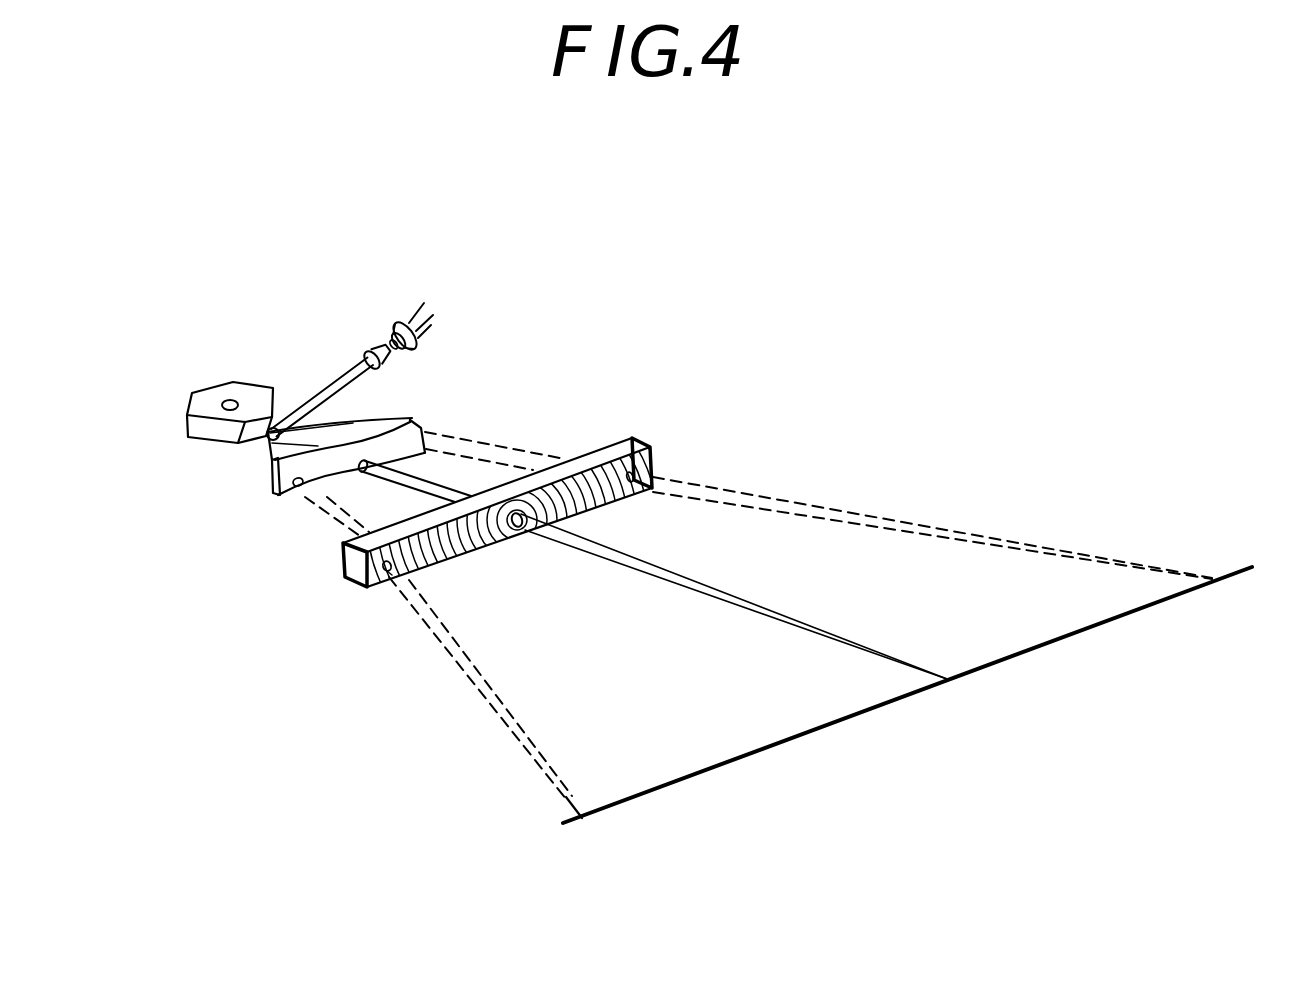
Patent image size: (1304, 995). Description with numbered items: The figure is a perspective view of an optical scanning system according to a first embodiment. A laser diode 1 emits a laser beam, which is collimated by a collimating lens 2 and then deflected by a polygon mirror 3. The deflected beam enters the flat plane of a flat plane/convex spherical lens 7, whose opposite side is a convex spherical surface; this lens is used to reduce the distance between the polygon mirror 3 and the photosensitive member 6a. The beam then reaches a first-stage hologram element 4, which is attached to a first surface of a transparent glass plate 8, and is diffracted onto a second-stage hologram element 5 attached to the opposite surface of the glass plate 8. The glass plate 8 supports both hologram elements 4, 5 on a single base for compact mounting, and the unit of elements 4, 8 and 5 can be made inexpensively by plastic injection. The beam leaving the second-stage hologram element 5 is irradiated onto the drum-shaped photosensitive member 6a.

The laser diode 1 is at (392, 318).
The collimating lens 2 is at (375, 345).
The polygon mirror 3 is at (276, 424).
The first-stage hologram element 4 is at (628, 438).
The second-stage hologram element 5 is at (654, 460).
The photosensitive member 6a is at (1100, 623).
The flat plane/convex spherical lens 7 is at (430, 420).
The transparent glass plate 8 is at (356, 586).